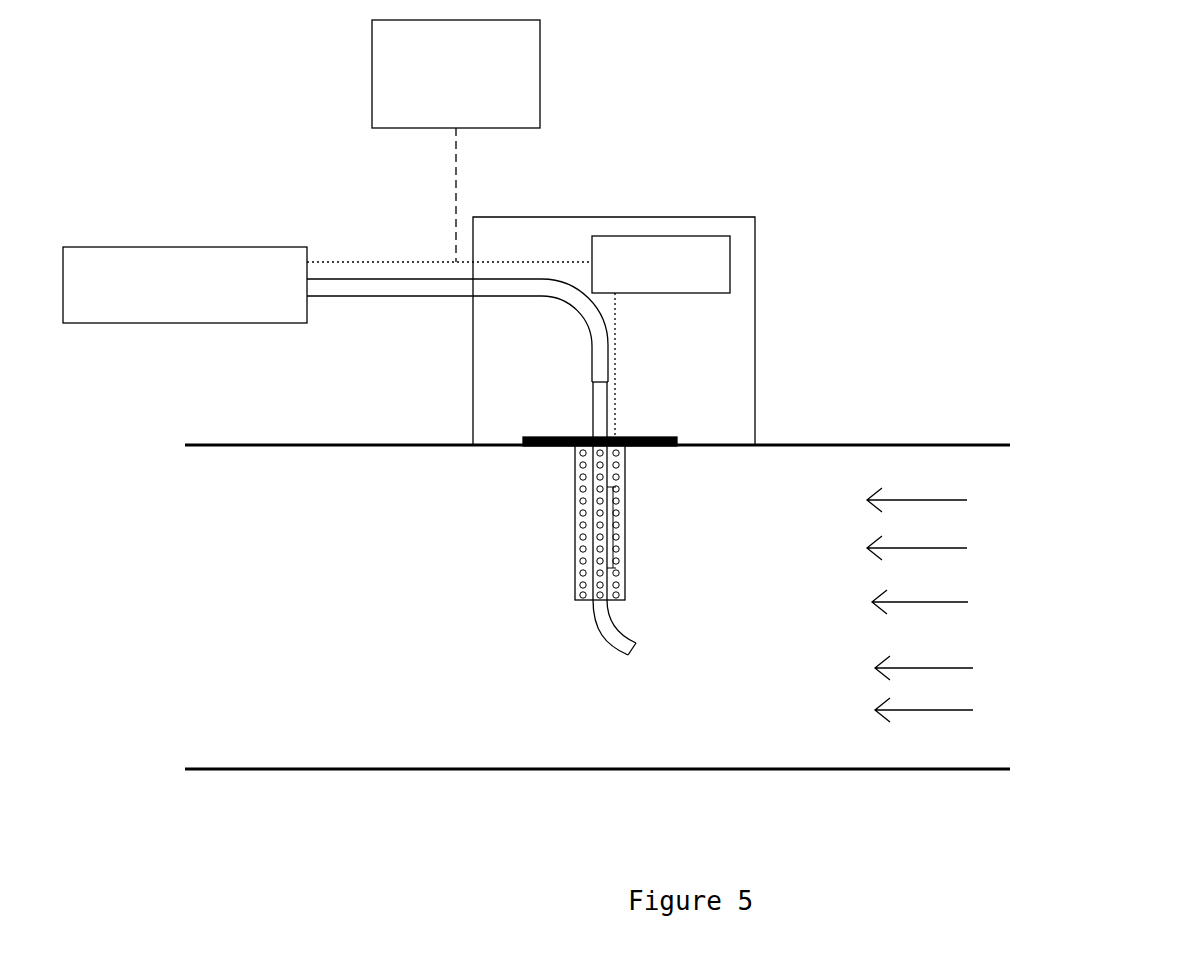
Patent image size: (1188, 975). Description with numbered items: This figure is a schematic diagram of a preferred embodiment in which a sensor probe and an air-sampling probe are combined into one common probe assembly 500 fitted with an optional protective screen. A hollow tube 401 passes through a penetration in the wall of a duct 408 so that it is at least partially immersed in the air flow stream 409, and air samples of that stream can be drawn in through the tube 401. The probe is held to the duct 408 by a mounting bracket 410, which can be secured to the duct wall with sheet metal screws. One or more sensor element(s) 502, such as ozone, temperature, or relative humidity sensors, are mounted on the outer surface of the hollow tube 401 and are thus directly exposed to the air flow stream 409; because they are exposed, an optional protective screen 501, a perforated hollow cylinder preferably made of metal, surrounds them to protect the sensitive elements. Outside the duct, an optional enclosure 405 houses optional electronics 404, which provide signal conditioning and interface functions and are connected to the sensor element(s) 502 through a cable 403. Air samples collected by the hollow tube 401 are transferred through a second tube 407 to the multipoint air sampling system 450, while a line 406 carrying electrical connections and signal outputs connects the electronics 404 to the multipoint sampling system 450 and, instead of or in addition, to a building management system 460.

The building management system 460 is at (456, 141).
The multipoint air sampling system 450 is at (185, 285).
The line 406 is at (418, 258).
The second tube 407 is at (440, 296).
The common probe assembly 500 is at (727, 397).
The optional enclosure 405 is at (756, 218).
The optional electronics 404 is at (661, 264).
The cable 403 is at (613, 430).
The mounting bracket 410 is at (550, 437).
The hollow tube 401 is at (605, 642).
The optional protective screen 501 is at (572, 505).
The sensor element(s) 502 is at (623, 582).
The duct 408 is at (982, 769).
The air flow stream 409 is at (1019, 605).